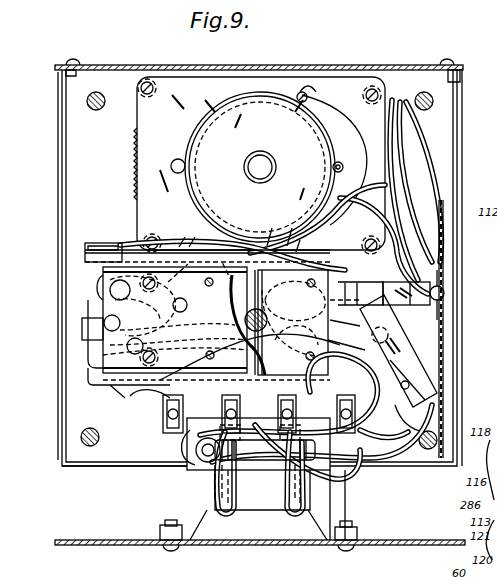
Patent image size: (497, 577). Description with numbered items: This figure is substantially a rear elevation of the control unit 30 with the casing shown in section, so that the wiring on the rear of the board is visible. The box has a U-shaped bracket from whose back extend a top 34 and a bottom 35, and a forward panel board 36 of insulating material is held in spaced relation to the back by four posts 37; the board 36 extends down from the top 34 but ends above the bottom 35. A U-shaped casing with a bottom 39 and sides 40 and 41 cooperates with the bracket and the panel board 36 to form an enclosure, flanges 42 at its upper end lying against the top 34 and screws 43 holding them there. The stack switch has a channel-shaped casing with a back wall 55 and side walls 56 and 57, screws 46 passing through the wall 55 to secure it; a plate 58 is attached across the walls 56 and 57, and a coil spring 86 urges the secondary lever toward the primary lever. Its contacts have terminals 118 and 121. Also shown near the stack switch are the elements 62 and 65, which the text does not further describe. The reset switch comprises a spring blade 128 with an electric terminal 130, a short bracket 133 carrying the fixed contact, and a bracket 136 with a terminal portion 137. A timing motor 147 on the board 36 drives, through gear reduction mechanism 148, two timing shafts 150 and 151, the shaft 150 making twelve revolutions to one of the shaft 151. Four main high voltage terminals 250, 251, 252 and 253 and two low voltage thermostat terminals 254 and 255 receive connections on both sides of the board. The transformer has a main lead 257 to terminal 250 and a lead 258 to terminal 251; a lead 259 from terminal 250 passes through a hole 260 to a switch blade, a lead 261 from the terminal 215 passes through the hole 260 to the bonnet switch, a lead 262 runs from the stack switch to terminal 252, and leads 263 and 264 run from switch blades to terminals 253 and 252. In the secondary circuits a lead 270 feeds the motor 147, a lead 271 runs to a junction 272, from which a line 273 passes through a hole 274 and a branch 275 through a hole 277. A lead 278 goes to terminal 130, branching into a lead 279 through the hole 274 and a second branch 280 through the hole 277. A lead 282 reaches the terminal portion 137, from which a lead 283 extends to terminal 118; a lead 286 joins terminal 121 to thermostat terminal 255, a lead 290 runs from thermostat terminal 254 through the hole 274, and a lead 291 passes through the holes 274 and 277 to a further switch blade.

The indicator assembly 30 is at (60, 504).
The top 34 is at (345, 65).
The bottom 35 is at (102, 546).
The forward panel board 36 is at (72, 449).
The posts 37 is at (86, 101).
The bottom of casing 39 is at (124, 468).
The side of casing 40 is at (58, 210).
The side of casing 41 is at (460, 160).
The flanges 42 is at (78, 73).
The screws 43 is at (74, 63).
The screws 46 is at (210, 278).
The back wall 55 is at (108, 358).
The side wall 56 is at (222, 170).
The side wall 57 is at (108, 388).
The plate 58 is at (351, 318).
The dial 62 is at (247, 167).
The link 65 is at (335, 352).
The coil spring 86 is at (350, 300).
The terminal 118 is at (200, 255).
The terminal 121 is at (130, 398).
The spring blade 128 is at (398, 351).
The electric terminal 130 is at (400, 415).
The short bracket 133 is at (290, 318).
The bracket 136 is at (390, 290).
The terminal portion 137 is at (445, 290).
The control or timing motor 147 is at (265, 110).
The gear reduction mechanism 148 is at (130, 157).
The timing shaft 150 is at (332, 167).
The timing shaft 151 is at (178, 159).
The terminal 215 is at (103, 298).
The main high voltage terminal 250 is at (345, 478).
The main high voltage terminal 251 is at (284, 473).
The main high voltage terminal 252 is at (195, 470).
The main high voltage terminal 253 is at (163, 420).
The thermostat terminal 254 is at (82, 330).
The thermostat terminal 255 is at (90, 243).
The main lead 257 is at (318, 463).
The lead 258 is at (219, 495).
The lead 259 is at (288, 394).
The hole 260 is at (125, 340).
The lead 261 is at (98, 278).
The lead 262 is at (100, 385).
The lead 263 is at (140, 404).
The lead 264 is at (255, 465).
The lead 270 is at (245, 300).
The lead 271 is at (290, 226).
The junction 272 is at (298, 246).
The line 273 is at (242, 310).
The hole 274 is at (372, 318).
The branch 275 is at (317, 216).
The hole 277 is at (392, 98).
The lead 278 is at (386, 445).
The lead 279 is at (398, 384).
The second branch 280 is at (444, 335).
The lead 282 is at (445, 200).
The lead 283 is at (416, 262).
The lead 286 is at (160, 250).
The lead 290 is at (214, 345).
The lead 291 is at (408, 160).